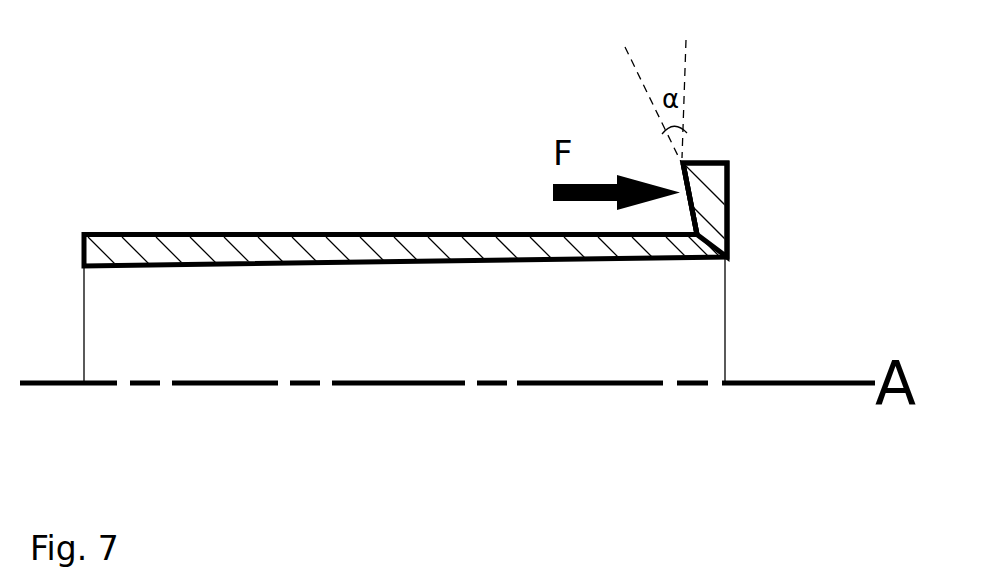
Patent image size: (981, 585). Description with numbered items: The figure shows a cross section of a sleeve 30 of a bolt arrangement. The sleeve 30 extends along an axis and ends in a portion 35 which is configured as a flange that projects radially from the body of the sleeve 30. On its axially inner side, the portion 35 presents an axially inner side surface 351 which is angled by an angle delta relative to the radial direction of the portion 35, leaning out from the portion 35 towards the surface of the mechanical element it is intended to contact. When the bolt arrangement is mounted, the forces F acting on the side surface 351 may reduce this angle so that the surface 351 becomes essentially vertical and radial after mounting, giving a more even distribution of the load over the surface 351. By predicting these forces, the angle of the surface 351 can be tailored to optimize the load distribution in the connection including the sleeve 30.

The sleeve 30 is at (112, 230).
The portion 35 is at (730, 200).
The axially inner side surface 351 is at (690, 195).